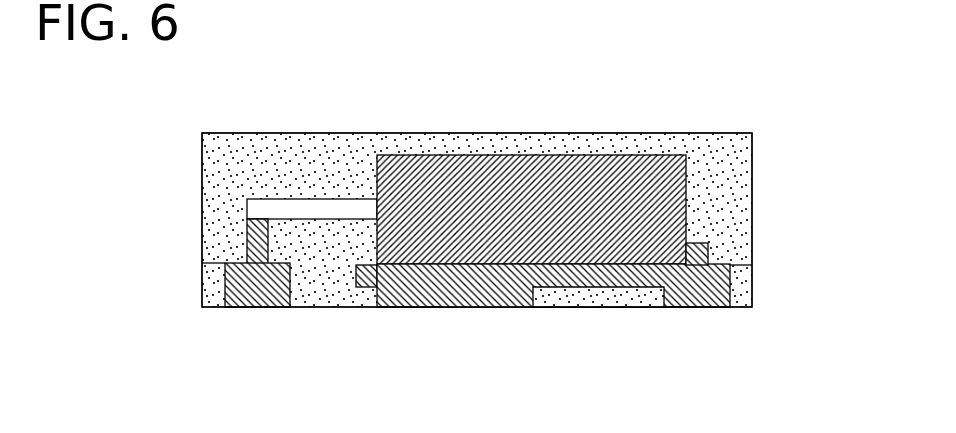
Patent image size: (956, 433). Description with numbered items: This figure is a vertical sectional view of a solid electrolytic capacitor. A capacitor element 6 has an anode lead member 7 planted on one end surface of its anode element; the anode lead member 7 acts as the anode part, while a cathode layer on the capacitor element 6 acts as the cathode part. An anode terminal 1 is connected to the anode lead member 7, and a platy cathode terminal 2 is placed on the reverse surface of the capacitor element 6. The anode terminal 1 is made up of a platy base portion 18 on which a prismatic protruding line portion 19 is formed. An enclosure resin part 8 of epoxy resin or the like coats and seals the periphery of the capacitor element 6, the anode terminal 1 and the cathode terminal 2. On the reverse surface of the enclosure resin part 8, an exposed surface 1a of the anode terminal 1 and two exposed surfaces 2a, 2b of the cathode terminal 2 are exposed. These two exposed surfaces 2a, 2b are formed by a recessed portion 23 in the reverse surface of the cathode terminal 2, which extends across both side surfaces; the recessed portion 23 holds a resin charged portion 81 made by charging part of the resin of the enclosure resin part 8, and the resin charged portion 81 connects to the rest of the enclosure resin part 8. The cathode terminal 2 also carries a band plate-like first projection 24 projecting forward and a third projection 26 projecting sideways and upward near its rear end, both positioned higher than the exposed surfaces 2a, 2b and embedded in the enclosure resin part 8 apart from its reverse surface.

The anode terminal 1 is at (193, 283).
The exposed surface 1a is at (263, 307).
The cathode terminal 2 is at (486, 292).
The exposed surface 2a is at (408, 307).
The exposed surface 2b is at (694, 307).
The capacitor element 6 is at (590, 172).
The anode lead member 7 is at (270, 208).
The enclosure resin part 8 is at (330, 152).
The base portion 18 is at (233, 308).
The protruding line portion 19 is at (247, 226).
The recessed portion 23 is at (598, 288).
The first projection 24 is at (358, 268).
The third projection 26 is at (708, 252).
The resin charged portion 81 is at (556, 295).